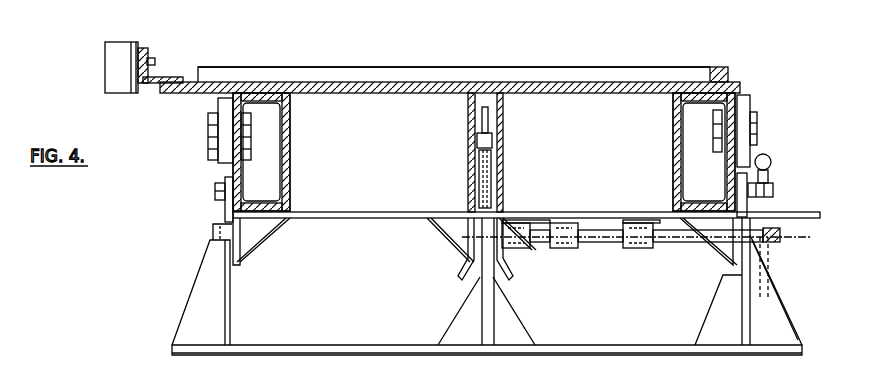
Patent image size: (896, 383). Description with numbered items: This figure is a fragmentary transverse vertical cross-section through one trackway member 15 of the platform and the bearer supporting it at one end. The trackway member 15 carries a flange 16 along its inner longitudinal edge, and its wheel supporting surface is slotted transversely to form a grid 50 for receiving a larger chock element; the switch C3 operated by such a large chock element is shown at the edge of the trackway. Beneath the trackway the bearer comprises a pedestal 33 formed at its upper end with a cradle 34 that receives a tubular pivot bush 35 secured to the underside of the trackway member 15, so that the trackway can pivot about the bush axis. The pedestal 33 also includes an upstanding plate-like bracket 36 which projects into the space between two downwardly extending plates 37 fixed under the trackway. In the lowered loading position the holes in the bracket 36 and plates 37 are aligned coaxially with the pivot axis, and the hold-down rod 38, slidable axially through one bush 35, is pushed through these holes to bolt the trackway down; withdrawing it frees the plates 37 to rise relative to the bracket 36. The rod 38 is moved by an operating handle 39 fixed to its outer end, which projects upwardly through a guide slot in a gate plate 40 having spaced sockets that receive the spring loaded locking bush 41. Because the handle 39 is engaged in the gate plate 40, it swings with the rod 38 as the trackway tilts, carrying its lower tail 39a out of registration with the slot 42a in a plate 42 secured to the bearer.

The switch C3 is at (113, 45).
The flange 16 is at (143, 52).
The trackway member 15 is at (320, 88).
The grid 50 is at (532, 67).
The operating handle 39 is at (770, 158).
The locking bush 41 is at (775, 190).
The gate plate 40 is at (812, 210).
The rod 38 is at (677, 240).
The upstanding bracket 36 is at (485, 317).
The downwardly extending plates 37 is at (462, 252).
The tubular pivot bush 35 is at (212, 232).
The cradle 34 is at (230, 252).
The pedestal 33 is at (213, 312).
The plate 42 is at (790, 290).
The slot 42a is at (782, 281).
The tail of the lever 39a is at (767, 282).